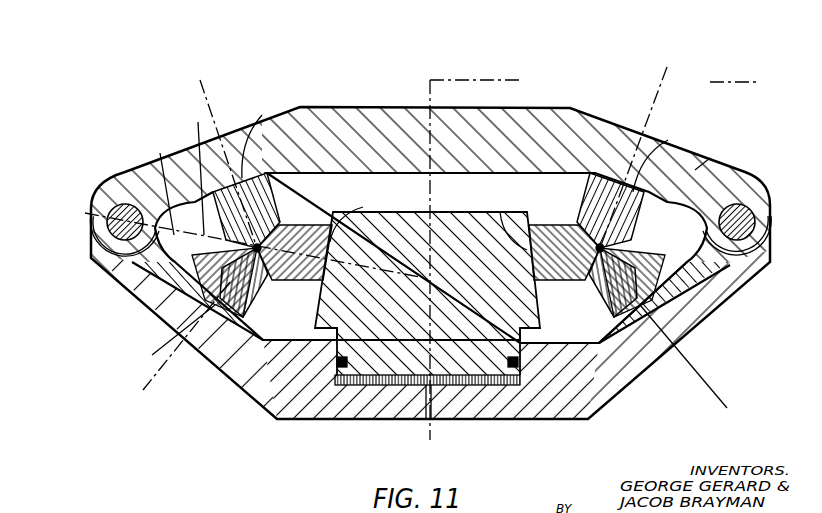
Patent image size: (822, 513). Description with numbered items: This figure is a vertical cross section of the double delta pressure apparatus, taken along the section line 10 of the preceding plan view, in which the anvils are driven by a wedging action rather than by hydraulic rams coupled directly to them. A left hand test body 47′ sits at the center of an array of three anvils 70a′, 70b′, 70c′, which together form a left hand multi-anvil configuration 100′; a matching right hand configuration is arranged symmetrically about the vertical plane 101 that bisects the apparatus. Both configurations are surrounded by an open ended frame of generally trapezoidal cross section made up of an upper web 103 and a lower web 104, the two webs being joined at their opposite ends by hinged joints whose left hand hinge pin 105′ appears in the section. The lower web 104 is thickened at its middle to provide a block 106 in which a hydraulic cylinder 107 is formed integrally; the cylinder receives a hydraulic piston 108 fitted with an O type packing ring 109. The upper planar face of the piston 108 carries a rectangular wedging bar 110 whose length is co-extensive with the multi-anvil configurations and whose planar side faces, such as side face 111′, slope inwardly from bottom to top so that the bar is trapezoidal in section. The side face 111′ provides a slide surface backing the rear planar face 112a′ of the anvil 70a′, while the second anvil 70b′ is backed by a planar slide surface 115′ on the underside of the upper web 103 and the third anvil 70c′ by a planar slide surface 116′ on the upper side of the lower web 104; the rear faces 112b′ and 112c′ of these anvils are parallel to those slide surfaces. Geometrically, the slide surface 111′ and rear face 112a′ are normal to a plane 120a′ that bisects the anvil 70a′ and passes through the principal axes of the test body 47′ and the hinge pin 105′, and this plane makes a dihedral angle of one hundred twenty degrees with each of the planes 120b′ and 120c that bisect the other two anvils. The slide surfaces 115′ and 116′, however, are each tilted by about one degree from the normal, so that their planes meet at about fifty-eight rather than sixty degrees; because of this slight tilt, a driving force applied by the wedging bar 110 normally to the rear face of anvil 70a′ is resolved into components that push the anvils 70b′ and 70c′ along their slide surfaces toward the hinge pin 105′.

The section line 10- 10 is at (82, 207).
The left hand test body 47′ is at (253, 249).
The anvil 70a′ is at (300, 236).
The second anvil 70b′ is at (268, 188).
The third anvil 70c′ is at (258, 291).
The left hand multi-anvil configuration 100′ is at (220, 231).
The vertical plane 101 is at (432, 432).
The upper web 103 is at (540, 122).
The lower web 104 is at (630, 380).
The hinge pin 105′ is at (112, 232).
The block 106 is at (503, 410).
The hydraulic cylinder 107 is at (390, 373).
The hydraulic piston 108 is at (365, 370).
The O type packing ring 109 is at (327, 373).
The wedging bar 110 is at (450, 217).
The side face 111′ is at (318, 322).
The rear planar face 112a′ is at (361, 212).
The rear face 112b′ is at (255, 140).
The rear face 112c′ is at (164, 333).
The slide surface 115′ is at (189, 168).
The slide surface 116′ is at (133, 289).
The plane 120a′ is at (160, 182).
The plane 120b′ is at (212, 108).
The plane 120c is at (143, 387).